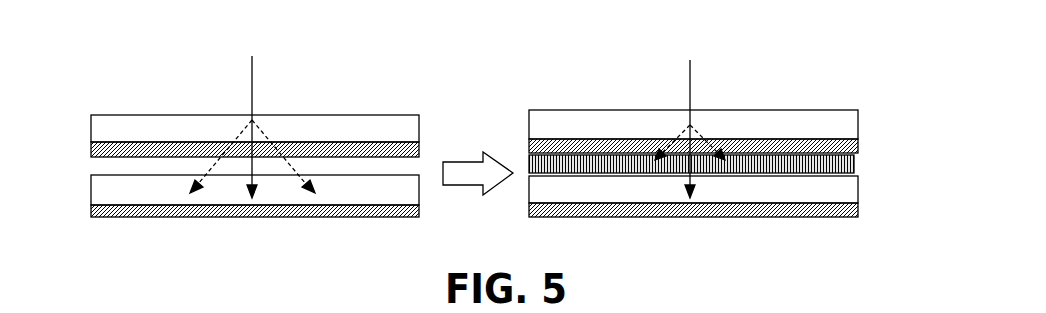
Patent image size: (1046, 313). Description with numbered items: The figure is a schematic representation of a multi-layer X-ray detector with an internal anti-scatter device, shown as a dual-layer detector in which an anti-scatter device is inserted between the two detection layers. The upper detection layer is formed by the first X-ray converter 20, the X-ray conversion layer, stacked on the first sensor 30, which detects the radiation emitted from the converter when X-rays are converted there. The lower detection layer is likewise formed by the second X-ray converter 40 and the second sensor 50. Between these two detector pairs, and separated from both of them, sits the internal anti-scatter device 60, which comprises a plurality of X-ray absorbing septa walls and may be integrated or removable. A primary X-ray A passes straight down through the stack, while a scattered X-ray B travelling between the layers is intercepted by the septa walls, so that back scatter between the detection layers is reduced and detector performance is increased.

The first X-ray converter 20 is at (789, 125).
The first sensor 30 is at (529, 145).
The internal anti-scatter device 60 is at (855, 162).
The second X-ray converter 40 is at (541, 190).
The second sensor 50 is at (735, 208).
The primary X-ray A is at (690, 70).
The scattered X-ray B is at (677, 132).